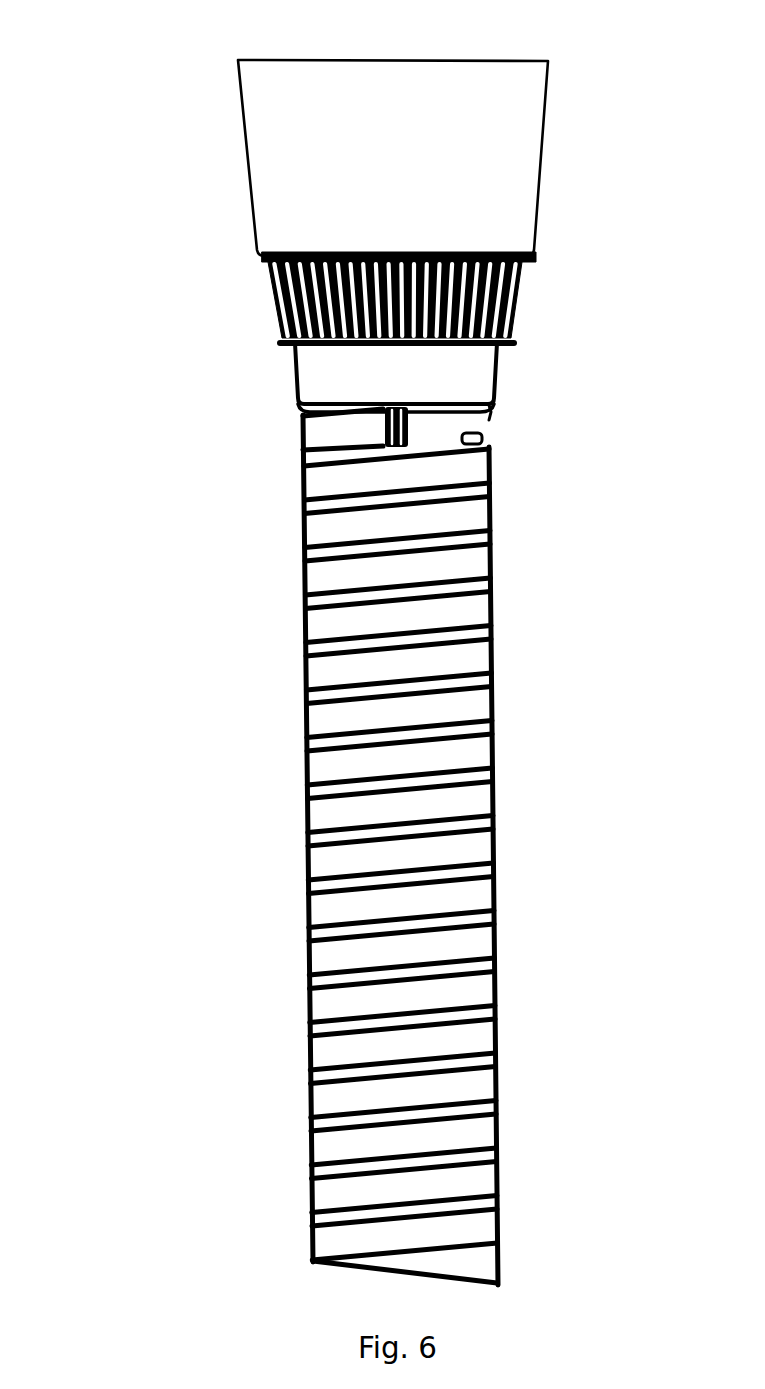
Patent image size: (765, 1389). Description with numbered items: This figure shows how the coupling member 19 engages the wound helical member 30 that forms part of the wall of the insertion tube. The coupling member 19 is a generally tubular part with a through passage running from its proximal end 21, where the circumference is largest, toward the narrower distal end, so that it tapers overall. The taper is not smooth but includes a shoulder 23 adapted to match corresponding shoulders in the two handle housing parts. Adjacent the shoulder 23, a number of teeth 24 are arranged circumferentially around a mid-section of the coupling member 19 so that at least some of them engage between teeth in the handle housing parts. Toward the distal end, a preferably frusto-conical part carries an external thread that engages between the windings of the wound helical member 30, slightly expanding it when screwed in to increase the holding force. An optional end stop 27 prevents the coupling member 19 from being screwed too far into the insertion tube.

The coupling member 19 is at (165, 165).
The proximal end 21 is at (506, 58).
The shoulder 23 is at (258, 257).
The teeth 24 is at (522, 292).
The end stop 27 is at (410, 423).
The wound helical member 30 is at (323, 479).